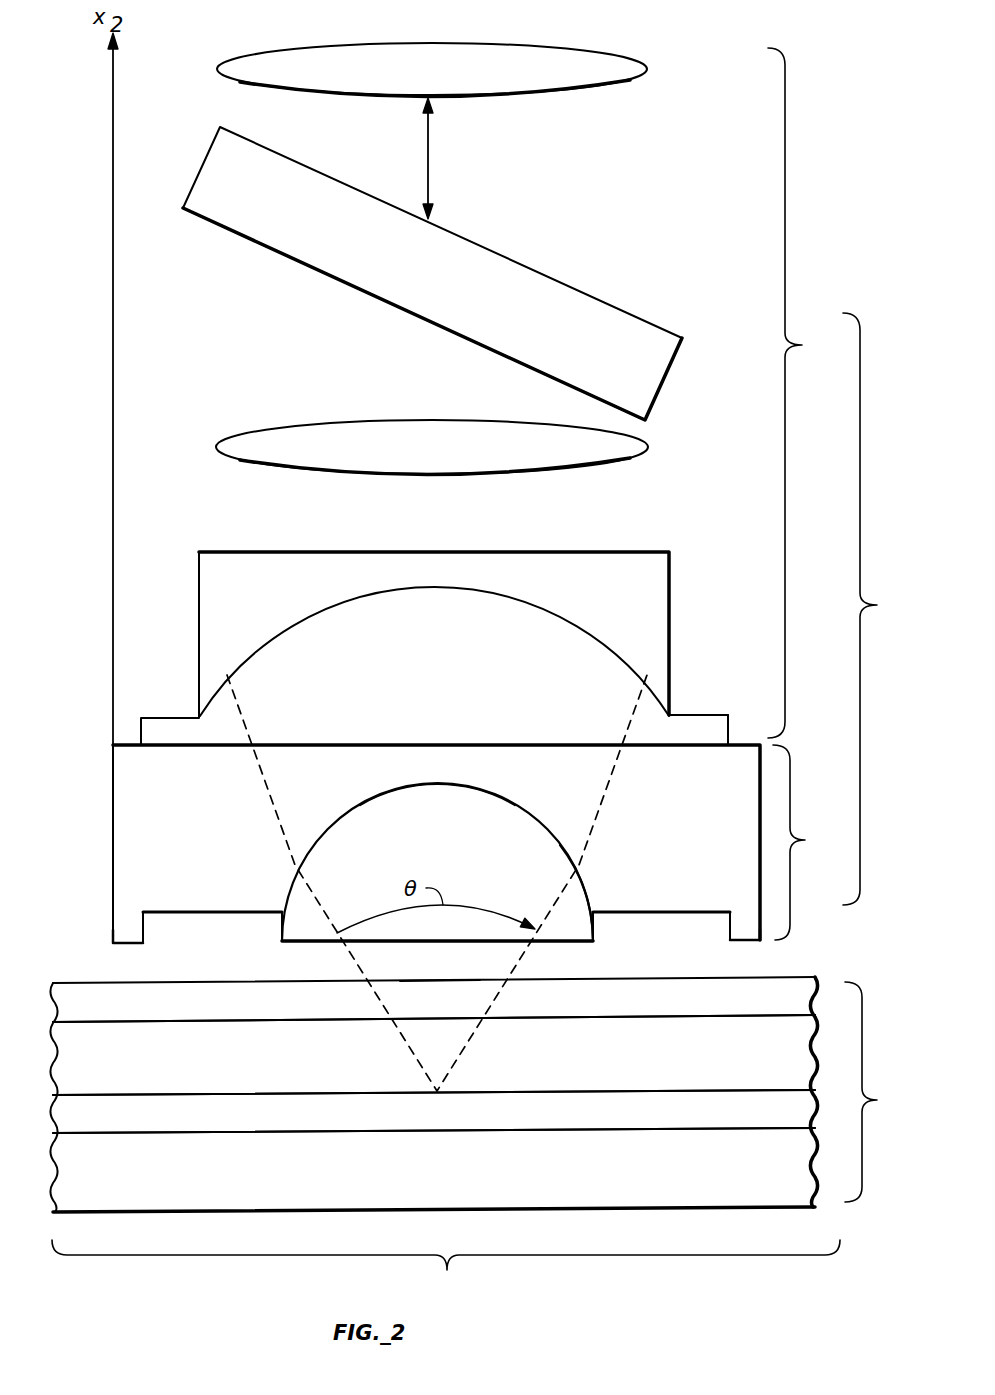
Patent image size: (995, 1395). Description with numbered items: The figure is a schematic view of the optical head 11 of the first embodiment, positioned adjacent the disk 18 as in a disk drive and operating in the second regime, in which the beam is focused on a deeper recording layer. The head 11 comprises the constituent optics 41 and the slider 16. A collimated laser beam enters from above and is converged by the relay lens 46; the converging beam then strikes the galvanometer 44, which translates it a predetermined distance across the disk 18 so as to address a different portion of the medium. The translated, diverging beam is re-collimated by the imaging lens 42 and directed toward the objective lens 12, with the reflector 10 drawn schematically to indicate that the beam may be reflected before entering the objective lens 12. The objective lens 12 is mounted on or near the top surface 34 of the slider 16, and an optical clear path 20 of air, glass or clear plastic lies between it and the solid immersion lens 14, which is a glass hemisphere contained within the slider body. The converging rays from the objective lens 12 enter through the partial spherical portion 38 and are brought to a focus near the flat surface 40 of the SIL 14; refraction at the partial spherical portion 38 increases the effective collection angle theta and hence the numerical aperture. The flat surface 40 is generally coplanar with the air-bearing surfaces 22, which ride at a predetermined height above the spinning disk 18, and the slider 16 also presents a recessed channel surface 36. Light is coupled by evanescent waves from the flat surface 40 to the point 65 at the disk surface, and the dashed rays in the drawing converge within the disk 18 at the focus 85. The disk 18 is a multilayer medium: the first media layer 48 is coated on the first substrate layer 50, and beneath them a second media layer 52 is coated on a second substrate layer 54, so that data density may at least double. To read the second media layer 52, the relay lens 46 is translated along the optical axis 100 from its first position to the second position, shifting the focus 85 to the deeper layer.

The reflector 10 is at (669, 592).
The objective lens 12 is at (628, 655).
The solid immersion lens (SIL) 14 is at (452, 841).
The slider 16 is at (479, 844).
The disk 18 is at (484, 1123).
The optical clear path 20 is at (452, 778).
The air-bearing surfaces 22 is at (130, 948).
The top surface 34 is at (750, 743).
The channel surface 36 is at (218, 918).
The partial spherical portion 38 is at (580, 886).
The flat surface 40 is at (555, 942).
The constituent optics 41 is at (804, 393).
The imaging lens 42 is at (585, 466).
The galvanometer 44 is at (583, 292).
The relay lens 46 is at (585, 88).
The first media layer 48 is at (769, 1006).
The first substrate layer 50 is at (769, 1065).
The second media layer 52 is at (769, 1120).
The second substrate layer 54 is at (769, 1180).
The focal point on disk surface 65 is at (437, 980).
The focal point 85 is at (436, 1092).
The optical axis 100 is at (430, 165).
The head 11 is at (878, 609).